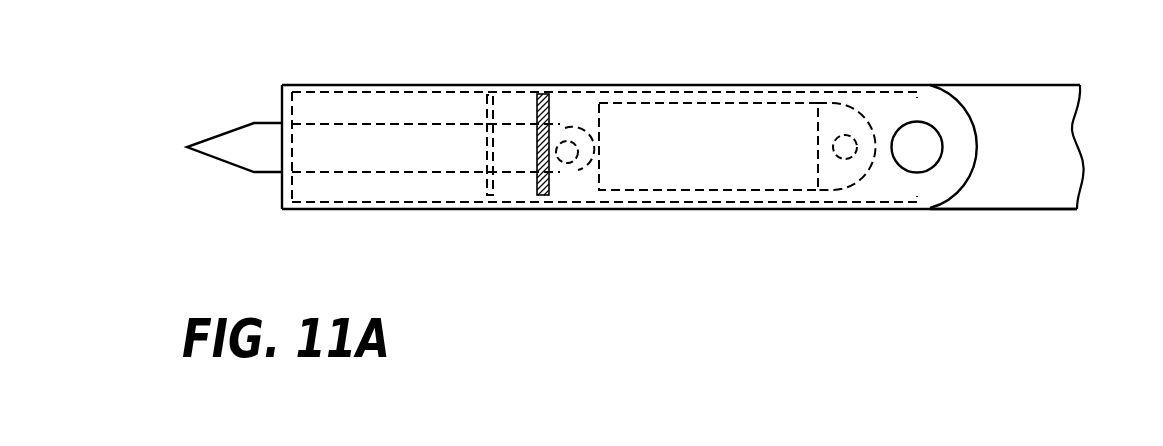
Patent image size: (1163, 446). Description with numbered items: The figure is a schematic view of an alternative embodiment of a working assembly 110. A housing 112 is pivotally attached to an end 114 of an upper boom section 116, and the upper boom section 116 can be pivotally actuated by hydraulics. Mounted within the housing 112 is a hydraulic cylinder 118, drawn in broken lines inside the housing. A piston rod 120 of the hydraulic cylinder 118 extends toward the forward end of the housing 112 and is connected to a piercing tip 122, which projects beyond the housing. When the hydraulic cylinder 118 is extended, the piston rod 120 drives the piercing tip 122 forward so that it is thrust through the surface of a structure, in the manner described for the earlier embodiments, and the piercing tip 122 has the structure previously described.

The working assembly 110 is at (1002, 83).
The housing 112 is at (878, 100).
The end 114 is at (1082, 82).
The upper boom section 116 is at (1005, 193).
The hydraulic cylinder 118 is at (707, 160).
The piston rod 120 is at (592, 160).
The piercing tip 122 is at (237, 147).